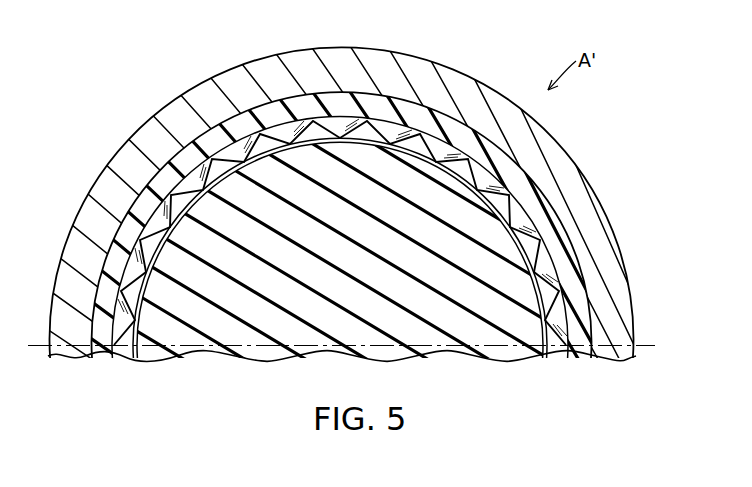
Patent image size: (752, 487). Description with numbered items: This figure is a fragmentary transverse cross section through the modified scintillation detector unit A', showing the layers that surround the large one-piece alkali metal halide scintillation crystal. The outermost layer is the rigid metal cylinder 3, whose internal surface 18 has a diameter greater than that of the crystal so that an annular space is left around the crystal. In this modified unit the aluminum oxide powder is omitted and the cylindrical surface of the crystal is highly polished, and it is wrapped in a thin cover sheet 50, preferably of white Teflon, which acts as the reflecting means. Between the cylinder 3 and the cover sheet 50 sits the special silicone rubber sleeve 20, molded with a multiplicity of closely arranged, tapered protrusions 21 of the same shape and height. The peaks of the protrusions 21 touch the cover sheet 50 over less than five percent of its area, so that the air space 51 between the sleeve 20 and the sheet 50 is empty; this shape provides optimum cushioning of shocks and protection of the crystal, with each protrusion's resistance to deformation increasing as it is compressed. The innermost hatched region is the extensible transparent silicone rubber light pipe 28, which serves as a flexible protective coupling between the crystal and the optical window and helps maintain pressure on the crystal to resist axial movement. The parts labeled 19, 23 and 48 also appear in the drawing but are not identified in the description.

The metal cylinder 3 is at (598, 247).
The internal surface of the cylinder 18 is at (305, 95).
The outer cover layer 19 is at (127, 147).
The sleeve 20 is at (440, 125).
The protrusions 21 is at (506, 203).
The inner liner boundary 23 is at (183, 210).
The light pipe 28 is at (431, 334).
The reinforcement layer boundary 48 is at (533, 233).
The cover sheet 50 is at (383, 122).
The air space 51 is at (203, 180).